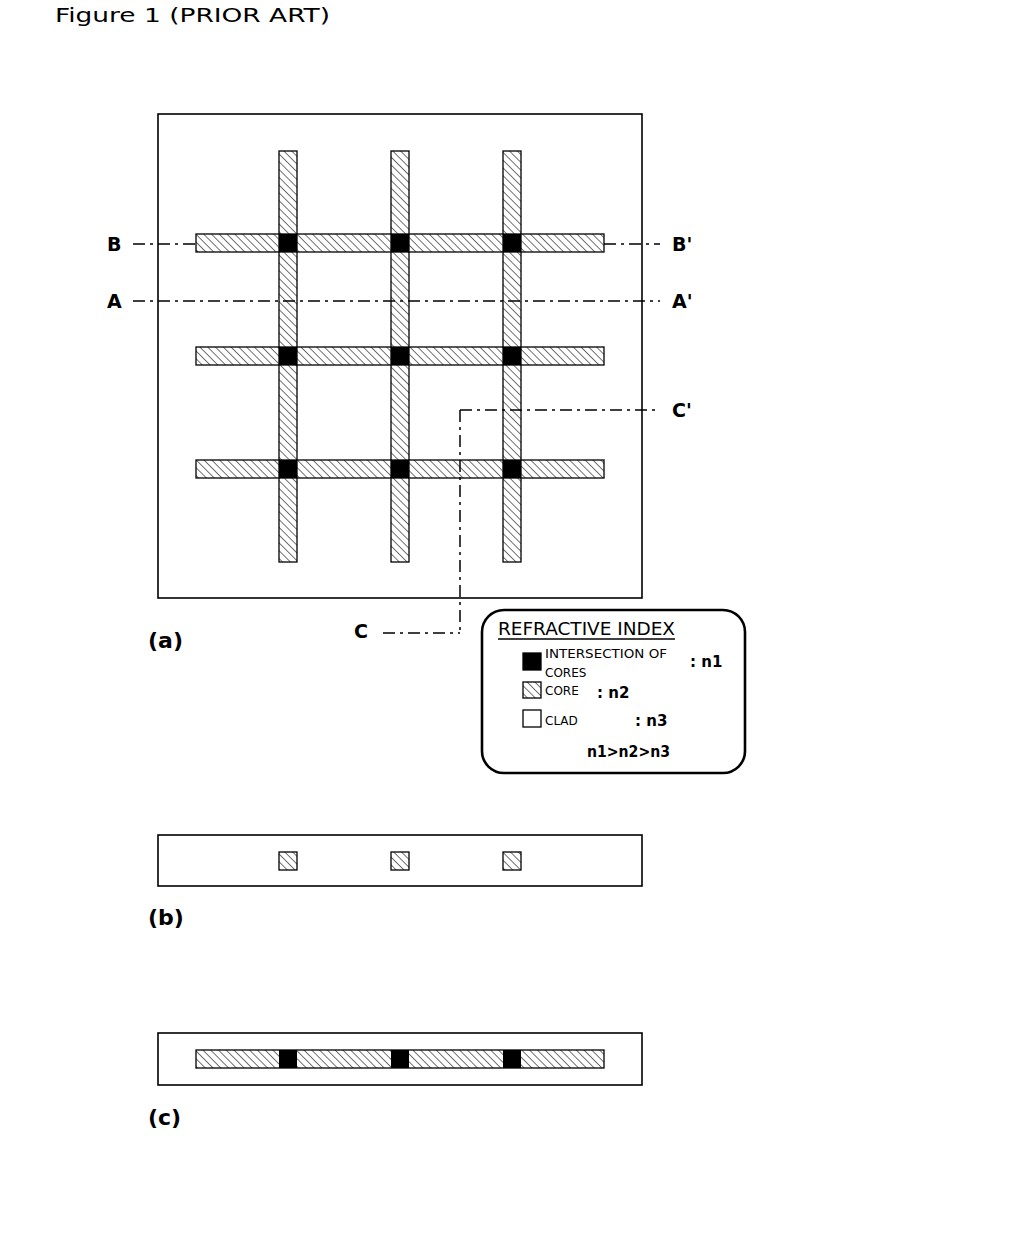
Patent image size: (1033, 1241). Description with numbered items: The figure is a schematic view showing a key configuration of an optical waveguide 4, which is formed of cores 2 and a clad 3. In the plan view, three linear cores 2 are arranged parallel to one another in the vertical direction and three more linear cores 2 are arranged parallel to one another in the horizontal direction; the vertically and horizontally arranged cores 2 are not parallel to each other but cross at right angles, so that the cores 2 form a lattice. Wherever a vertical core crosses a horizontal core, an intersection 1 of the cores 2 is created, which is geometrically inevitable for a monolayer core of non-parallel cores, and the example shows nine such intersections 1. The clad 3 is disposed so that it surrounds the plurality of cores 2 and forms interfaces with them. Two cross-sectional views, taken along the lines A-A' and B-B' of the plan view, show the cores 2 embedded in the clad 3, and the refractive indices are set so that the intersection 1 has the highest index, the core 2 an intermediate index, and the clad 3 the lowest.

The intersection of cores 1 is at (329, 552).
The core 2 is at (333, 1057).
The clad 3 is at (487, 133).
The optical waveguide 4 is at (497, 593).